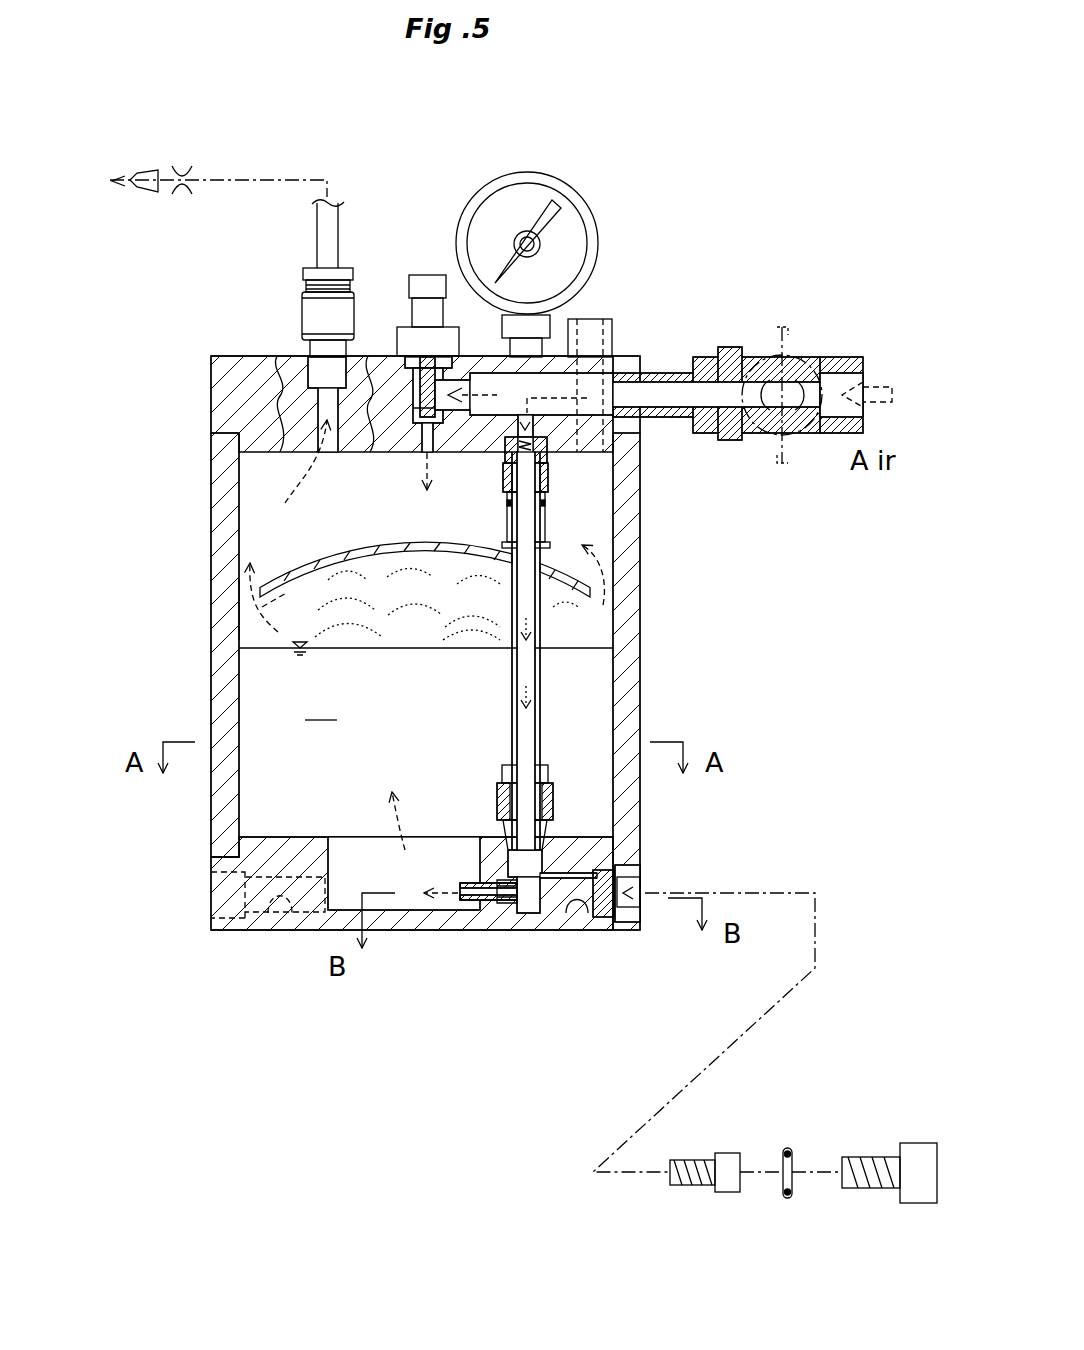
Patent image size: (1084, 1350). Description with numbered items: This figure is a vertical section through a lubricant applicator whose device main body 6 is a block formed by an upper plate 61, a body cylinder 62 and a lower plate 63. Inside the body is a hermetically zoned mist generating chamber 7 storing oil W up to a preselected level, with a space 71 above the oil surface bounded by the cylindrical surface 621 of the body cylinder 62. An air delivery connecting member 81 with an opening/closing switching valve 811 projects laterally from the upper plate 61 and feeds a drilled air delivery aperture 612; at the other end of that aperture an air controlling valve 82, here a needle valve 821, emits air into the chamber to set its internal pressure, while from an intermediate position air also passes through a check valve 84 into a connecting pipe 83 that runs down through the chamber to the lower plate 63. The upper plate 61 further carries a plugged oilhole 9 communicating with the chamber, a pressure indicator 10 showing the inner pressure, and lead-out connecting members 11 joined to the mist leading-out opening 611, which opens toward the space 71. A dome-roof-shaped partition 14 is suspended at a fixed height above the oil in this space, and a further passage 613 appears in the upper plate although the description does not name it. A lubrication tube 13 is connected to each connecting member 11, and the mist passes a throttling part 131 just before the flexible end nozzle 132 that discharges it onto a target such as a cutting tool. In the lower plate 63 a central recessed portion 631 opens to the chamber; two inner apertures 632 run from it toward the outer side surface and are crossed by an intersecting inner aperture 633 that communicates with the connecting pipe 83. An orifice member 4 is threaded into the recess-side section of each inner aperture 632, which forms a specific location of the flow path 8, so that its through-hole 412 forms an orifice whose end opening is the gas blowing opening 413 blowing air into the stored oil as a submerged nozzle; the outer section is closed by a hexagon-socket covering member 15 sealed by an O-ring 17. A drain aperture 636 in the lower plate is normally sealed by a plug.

The orifice member 4 is at (480, 918).
The device main body 6 is at (648, 626).
The mist generating chamber 7 is at (246, 508).
The flow path 8 is at (510, 716).
The oilhole 9 is at (603, 322).
The pressure indicator 10 is at (524, 172).
The lead-out connecting member 11 is at (302, 320).
The lubrication tube 13 is at (264, 178).
The partition 14 is at (469, 546).
The covering member 15 is at (613, 933).
The O-ring 17 is at (788, 1200).
The upper plate 61 is at (206, 388).
The body cylinder 62 is at (210, 658).
The lower plate 63 is at (222, 936).
The space 71 is at (152, 477).
The air delivery connecting member 81 is at (739, 347).
The air controlling valve 82 is at (460, 355).
The connecting pipe 83 is at (542, 688).
The check valve 84 is at (538, 455).
The throttling part 131 is at (189, 168).
The end nozzle 132 is at (153, 171).
The through-hole 412 is at (463, 883).
The gas blowing opening 413 is at (463, 905).
The mist leading-out opening 611 is at (333, 452).
The air delivery aperture 612 is at (560, 380).
The branch passage 613 is at (425, 447).
The cylindrical surface 621 is at (238, 630).
The recessed portion 631 is at (330, 853).
The inner aperture 632 is at (587, 915).
The intersecting inner aperture 633 is at (530, 913).
The drain aperture 636 is at (268, 915).
The opening/closing switching valve 811 is at (777, 452).
The needle valve 821 is at (413, 393).